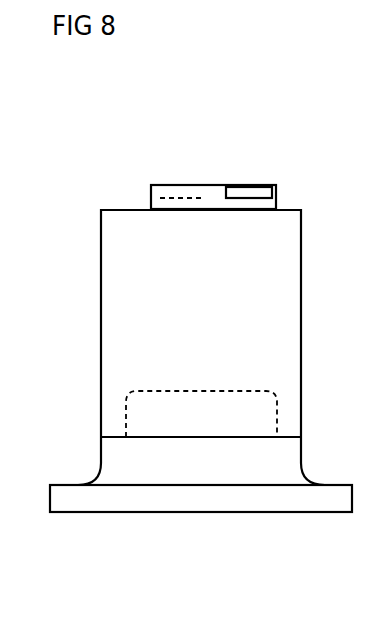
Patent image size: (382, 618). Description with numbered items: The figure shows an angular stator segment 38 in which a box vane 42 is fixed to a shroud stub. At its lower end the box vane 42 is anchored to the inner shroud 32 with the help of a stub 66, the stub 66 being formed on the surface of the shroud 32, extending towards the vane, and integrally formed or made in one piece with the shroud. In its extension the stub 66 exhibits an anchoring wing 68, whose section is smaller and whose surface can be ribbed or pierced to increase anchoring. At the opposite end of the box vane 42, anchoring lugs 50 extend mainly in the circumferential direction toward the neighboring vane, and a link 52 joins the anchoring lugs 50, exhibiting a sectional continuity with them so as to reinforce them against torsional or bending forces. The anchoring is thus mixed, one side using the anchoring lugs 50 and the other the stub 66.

The angular stator segment 38 is at (300, 146).
The box vane 42 is at (120, 312).
The anchoring stub 66 is at (120, 463).
The inner shroud 32 is at (198, 500).
The anchoring wing 68 is at (258, 409).
The anchoring lugs 50 is at (255, 193).
The link 52 is at (212, 193).